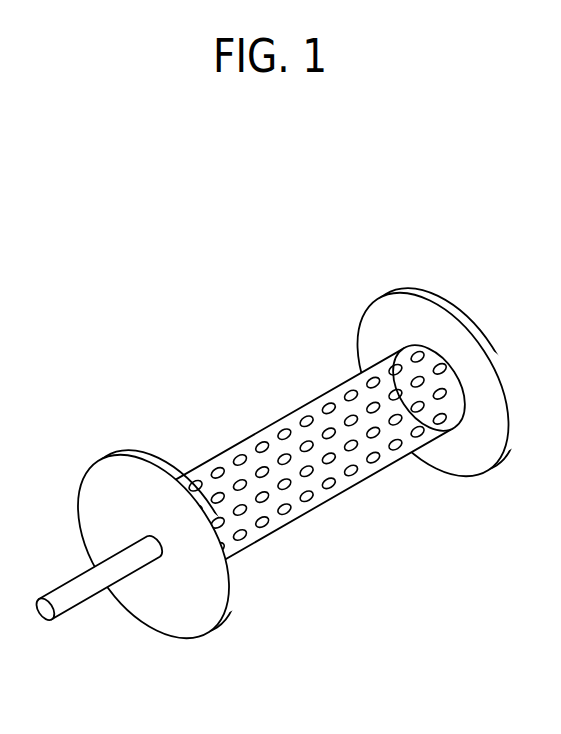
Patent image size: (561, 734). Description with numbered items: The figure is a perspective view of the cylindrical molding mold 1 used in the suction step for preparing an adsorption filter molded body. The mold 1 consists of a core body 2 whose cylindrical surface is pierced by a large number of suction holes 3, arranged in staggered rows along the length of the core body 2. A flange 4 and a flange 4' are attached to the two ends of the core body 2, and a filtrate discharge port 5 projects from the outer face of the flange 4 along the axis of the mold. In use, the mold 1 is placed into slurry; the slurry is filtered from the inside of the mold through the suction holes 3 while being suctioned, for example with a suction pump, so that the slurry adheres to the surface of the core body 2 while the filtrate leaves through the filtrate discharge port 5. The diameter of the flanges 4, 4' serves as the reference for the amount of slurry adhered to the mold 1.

The mold for preparing molded body 1 is at (288, 450).
The core body 2 is at (302, 520).
The suction hole 3 is at (372, 465).
The flange 4 is at (157, 511).
The flange 4' is at (436, 347).
The filtrate discharge port 5 is at (43, 622).